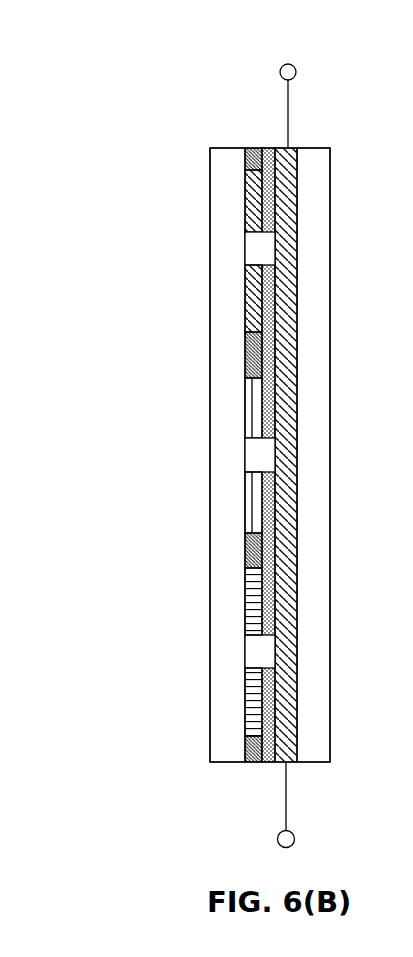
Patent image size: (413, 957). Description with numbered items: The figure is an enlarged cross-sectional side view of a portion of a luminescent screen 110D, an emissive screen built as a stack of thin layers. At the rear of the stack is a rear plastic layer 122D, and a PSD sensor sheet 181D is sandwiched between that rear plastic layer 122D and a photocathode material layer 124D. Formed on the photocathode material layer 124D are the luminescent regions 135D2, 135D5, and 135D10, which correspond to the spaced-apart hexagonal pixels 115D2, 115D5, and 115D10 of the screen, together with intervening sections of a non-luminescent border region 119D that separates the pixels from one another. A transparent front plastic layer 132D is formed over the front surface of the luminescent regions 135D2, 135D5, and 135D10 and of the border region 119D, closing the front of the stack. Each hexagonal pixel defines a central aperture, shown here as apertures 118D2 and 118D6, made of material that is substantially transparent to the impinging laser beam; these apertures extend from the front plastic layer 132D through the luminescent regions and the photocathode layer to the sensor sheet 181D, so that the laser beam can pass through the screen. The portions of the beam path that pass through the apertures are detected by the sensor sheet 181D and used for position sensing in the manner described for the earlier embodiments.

The luminescent screen 110D is at (246, 428).
The front plastic layer 132D is at (222, 156).
The photocathode material layer 124D is at (268, 147).
The PSD sensor sheet 181D is at (293, 146).
The rear plastic layer 122D is at (314, 156).
The hexagonal luminescent region (pixel) 115D2 is at (193, 210).
The aperture 118D2 is at (255, 253).
The luminescent region 135D2 is at (245, 286).
The non-luminescent border region 119D is at (245, 357).
The hexagonal luminescent region (pixel) 115D5 is at (195, 418).
The aperture 118D6 is at (255, 457).
The luminescent region 135D5 is at (252, 497).
The hexagonal luminescent region (pixel) 115D10 is at (201, 618).
The luminescent region 135D10 is at (252, 697).